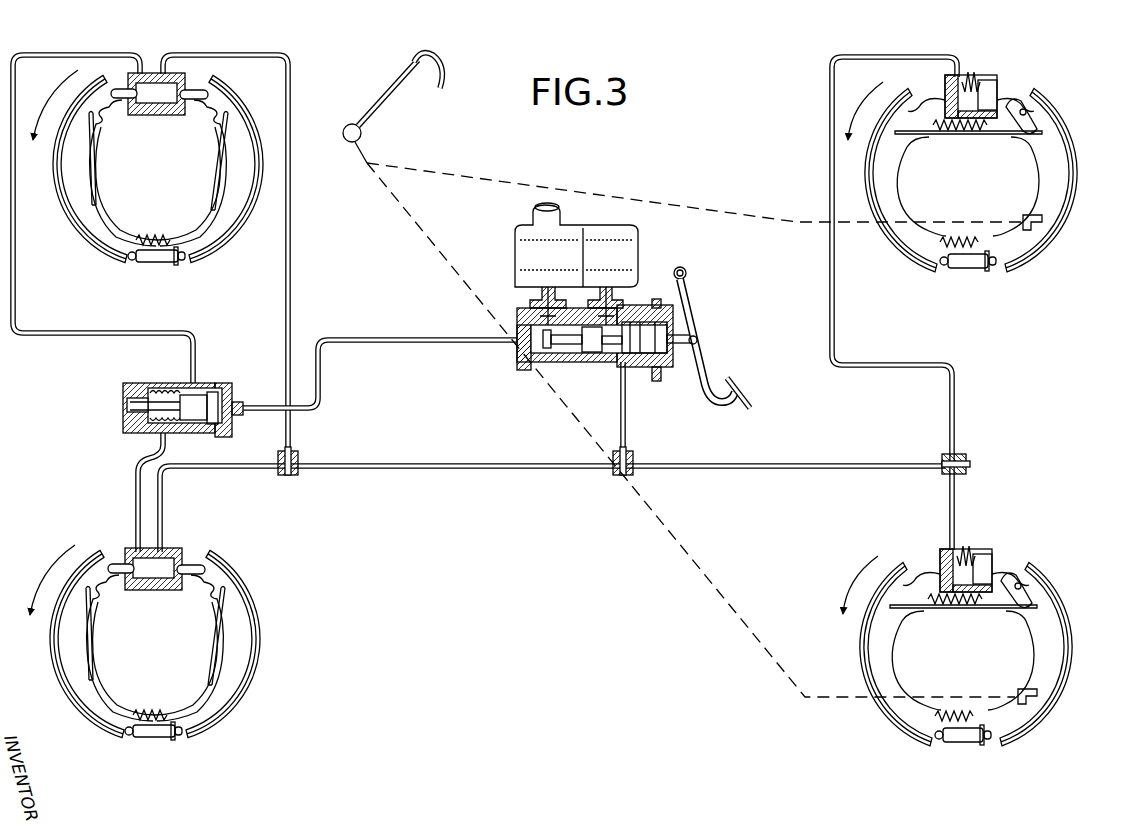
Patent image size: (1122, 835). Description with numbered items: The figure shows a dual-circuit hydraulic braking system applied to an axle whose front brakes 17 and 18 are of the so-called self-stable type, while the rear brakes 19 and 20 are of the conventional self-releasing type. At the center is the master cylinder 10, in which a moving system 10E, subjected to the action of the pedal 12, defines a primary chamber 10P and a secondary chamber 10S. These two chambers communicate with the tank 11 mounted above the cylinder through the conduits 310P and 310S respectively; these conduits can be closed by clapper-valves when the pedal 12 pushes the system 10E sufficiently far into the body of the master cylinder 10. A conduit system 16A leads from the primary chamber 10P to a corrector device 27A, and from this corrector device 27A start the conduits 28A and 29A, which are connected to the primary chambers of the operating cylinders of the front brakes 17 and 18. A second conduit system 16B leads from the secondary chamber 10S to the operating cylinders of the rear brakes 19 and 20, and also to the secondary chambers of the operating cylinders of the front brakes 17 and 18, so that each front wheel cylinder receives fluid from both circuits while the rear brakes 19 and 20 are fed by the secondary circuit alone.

The master cylinder 10 is at (523, 367).
The primary chamber 10P is at (546, 348).
The secondary chamber 10S is at (614, 352).
The moving system 10E is at (644, 323).
The tank 11 is at (592, 225).
The conduit 310P is at (549, 287).
The conduit 310S is at (607, 287).
The pedal 12 is at (707, 364).
The conduit system 16A is at (361, 340).
The conduit system 16B is at (802, 463).
The front brake 17 is at (247, 112).
The front brake 18 is at (243, 583).
The rear brake 19 is at (1070, 136).
The rear brake 20 is at (1057, 580).
The corrector device 27A is at (212, 380).
The conduit 28A is at (115, 333).
The conduit 29A is at (137, 514).